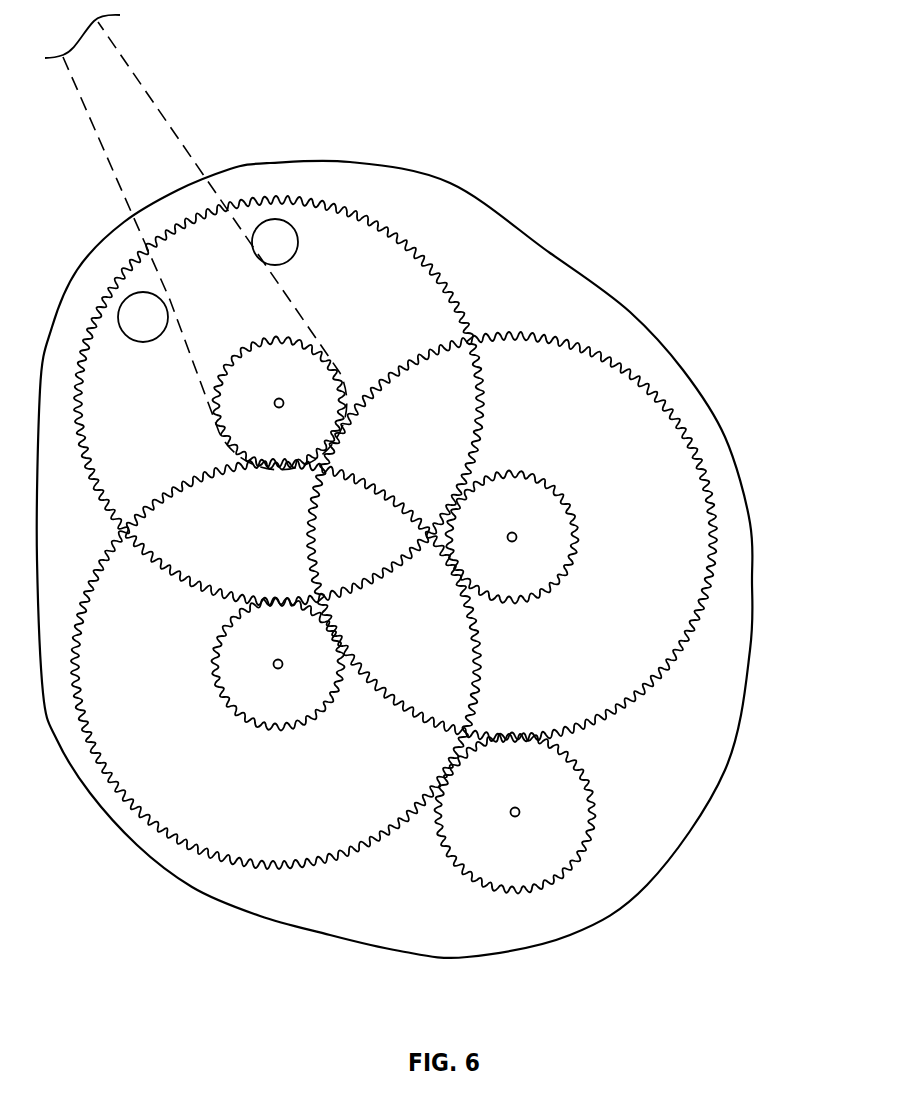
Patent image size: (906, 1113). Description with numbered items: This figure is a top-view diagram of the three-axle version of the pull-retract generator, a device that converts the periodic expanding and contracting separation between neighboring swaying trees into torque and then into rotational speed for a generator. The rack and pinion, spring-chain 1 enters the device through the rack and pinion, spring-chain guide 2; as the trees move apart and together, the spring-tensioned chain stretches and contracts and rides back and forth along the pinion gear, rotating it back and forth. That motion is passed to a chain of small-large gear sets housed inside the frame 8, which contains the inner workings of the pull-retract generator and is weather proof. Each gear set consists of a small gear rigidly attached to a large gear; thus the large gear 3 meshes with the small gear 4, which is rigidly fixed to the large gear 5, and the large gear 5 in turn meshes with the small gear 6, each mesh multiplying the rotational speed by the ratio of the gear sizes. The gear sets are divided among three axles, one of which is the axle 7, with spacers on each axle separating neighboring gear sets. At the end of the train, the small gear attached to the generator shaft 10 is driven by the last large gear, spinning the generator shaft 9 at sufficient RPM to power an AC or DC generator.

The rack and pinion spring-chain 1 is at (154, 104).
The rack and pinion spring-chain guide 2 is at (289, 220).
The large gear 3 is at (402, 237).
The small gear 4 is at (285, 338).
The large gear 5 is at (605, 350).
The small gear 6 is at (548, 487).
The axle 7 is at (517, 537).
The frame containing inner workings of PRG 8 is at (752, 567).
The generator shaft 9 is at (520, 812).
The small gear attached to generator shaft 10 is at (547, 880).